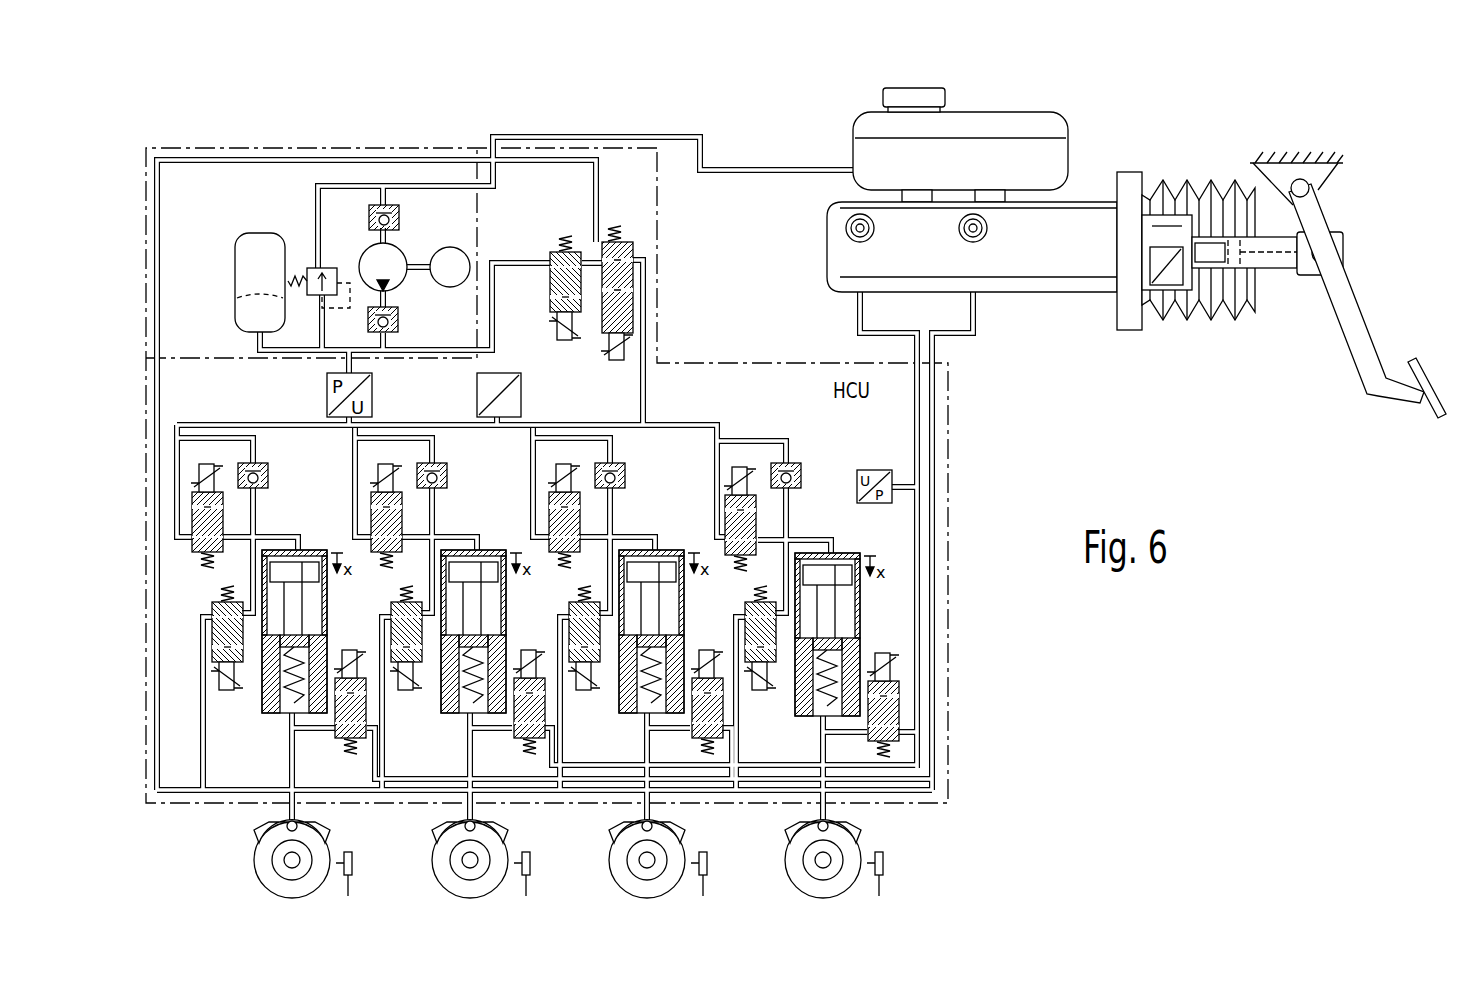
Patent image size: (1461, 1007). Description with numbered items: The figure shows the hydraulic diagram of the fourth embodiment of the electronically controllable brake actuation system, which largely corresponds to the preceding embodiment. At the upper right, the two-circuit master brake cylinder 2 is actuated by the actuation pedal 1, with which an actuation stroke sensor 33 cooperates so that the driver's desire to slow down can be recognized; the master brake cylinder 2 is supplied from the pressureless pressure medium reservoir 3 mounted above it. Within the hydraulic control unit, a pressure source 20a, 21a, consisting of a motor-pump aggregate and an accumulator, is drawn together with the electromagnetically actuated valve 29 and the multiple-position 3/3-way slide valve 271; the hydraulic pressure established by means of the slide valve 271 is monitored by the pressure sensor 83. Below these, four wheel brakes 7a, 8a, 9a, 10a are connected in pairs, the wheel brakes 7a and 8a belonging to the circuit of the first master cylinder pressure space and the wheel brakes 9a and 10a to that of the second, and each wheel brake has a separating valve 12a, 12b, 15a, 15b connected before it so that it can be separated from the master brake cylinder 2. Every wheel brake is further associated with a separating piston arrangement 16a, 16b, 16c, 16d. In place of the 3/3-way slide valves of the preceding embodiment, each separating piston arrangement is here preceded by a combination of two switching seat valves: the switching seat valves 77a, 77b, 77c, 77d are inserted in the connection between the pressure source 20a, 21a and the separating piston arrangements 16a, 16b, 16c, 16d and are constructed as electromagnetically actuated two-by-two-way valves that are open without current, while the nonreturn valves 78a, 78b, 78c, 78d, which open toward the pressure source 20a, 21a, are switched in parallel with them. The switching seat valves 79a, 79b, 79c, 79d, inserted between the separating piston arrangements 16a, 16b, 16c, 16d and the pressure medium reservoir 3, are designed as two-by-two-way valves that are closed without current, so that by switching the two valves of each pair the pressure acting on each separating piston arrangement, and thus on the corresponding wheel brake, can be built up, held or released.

The actuation pedal 1 is at (1346, 310).
The master brake cylinder 2 is at (1056, 265).
The pressure medium reservoir 3 is at (1046, 162).
The actuation stroke sensor 33 is at (1172, 310).
The pressure source 20a is at (420, 258).
The pressure source 21a is at (258, 250).
The electromagnetic valve 29 is at (553, 258).
The 3/3-way slide valve 271 is at (635, 292).
The pressure sensor 83 is at (476, 391).
The switching seat valve 77a is at (581, 515).
The switching seat valve 77b is at (224, 515).
The switching seat valve 77c is at (757, 517).
The switching seat valve 77d is at (403, 515).
The nonreturn valve 78a is at (625, 472).
The nonreturn valve 78b is at (268, 472).
The nonreturn valve 78c is at (801, 472).
The nonreturn valve 78d is at (447, 472).
The switching seat valve 79a is at (586, 693).
The switching seat valve 79b is at (229, 693).
The switching seat valve 79c is at (762, 693).
The switching seat valve 79d is at (408, 693).
The separating piston arrangement 16a is at (685, 622).
The separating piston arrangement 16b is at (328, 622).
The separating piston arrangement 16c is at (861, 622).
The separating piston arrangement 16d is at (507, 622).
The separating valve 12a is at (714, 752).
The separating valve 12b is at (340, 737).
The separating valve 15a is at (895, 754).
The separating valve 15b is at (541, 750).
The wheel brake 7a is at (627, 830).
The wheel brake 8a is at (272, 830).
The wheel brake 9a is at (803, 830).
The wheel brake 10a is at (450, 830).